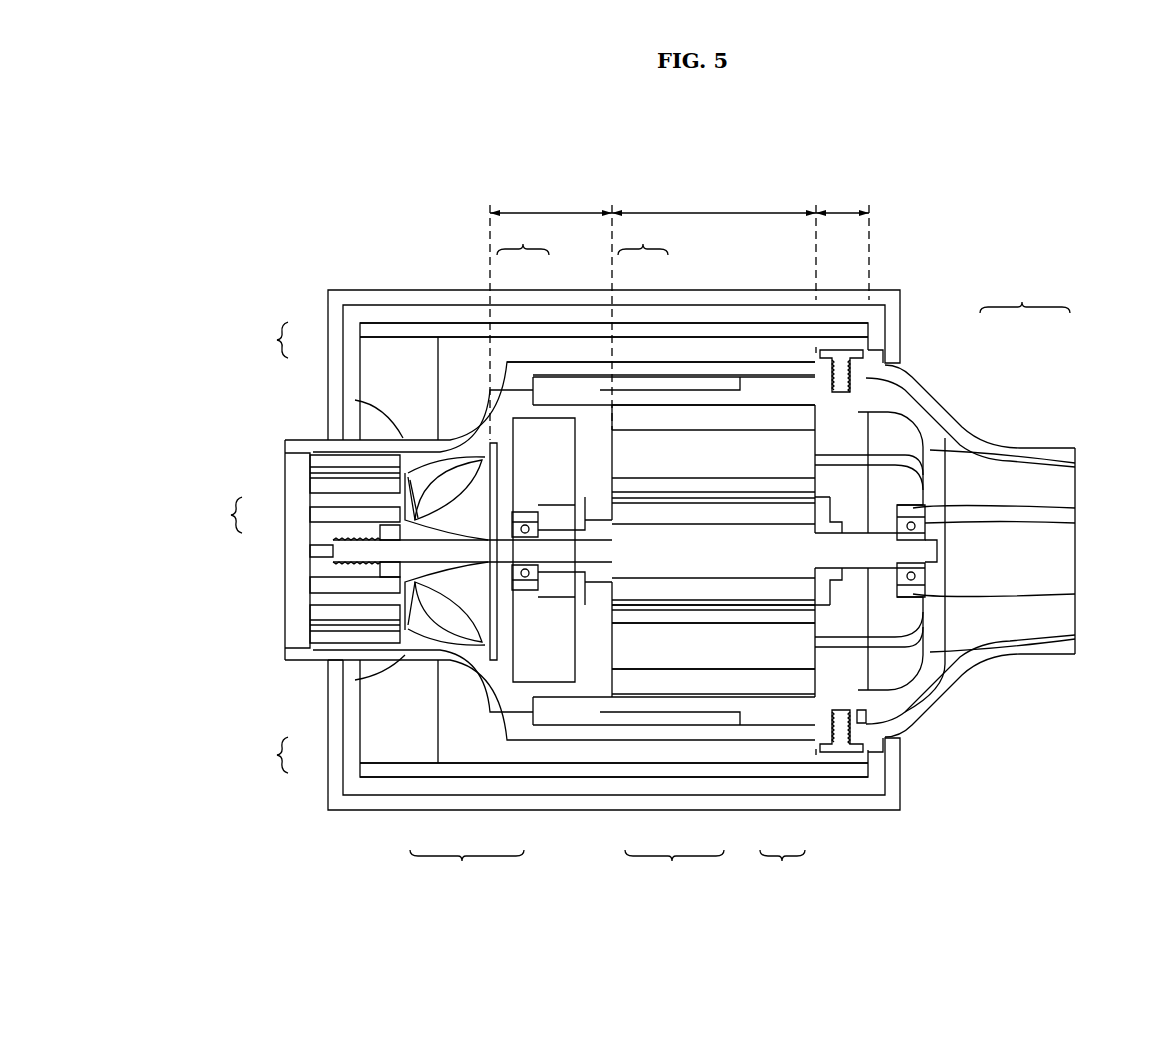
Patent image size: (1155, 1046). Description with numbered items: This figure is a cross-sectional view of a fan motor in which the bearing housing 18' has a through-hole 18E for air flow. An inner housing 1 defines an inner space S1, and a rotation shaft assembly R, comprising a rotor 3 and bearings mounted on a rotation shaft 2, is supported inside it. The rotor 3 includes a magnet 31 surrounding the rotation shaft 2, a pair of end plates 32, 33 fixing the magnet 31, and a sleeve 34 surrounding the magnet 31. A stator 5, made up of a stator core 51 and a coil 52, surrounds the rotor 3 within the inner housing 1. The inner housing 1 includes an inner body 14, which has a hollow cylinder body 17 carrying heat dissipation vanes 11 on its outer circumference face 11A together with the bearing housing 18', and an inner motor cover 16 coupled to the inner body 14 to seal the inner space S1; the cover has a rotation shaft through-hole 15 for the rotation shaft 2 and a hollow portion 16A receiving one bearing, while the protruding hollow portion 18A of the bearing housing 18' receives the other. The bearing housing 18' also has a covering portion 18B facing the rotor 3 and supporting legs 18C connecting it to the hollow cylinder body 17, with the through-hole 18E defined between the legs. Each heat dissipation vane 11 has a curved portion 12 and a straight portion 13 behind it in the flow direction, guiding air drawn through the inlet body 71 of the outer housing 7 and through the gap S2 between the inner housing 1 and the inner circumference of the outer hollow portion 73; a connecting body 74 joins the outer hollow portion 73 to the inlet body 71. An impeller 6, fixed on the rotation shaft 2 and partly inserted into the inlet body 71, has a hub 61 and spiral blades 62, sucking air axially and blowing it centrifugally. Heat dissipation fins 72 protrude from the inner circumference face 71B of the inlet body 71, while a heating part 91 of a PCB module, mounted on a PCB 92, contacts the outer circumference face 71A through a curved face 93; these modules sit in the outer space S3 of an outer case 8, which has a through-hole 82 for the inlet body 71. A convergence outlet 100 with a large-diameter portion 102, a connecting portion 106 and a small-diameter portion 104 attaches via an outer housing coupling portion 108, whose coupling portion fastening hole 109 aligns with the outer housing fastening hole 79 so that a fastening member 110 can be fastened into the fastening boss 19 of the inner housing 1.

The inner housing 1 is at (656, 477).
The rotation shaft 2 is at (925, 550).
The rotor 3 is at (701, 639).
The stator 5 is at (828, 643).
The impeller 6 is at (306, 549).
The outer housing 7 is at (375, 647).
The outer case 8 is at (335, 307).
The heat dissipation vane 11 is at (661, 306).
The outer circumference face 11A is at (700, 392).
The curved portion 12 is at (592, 365).
The straight portion 13 is at (660, 382).
The inner body 14 is at (546, 400).
The rotation shaft through-hole 15 is at (310, 549).
The inner motor cover 16 is at (503, 397).
The hollow portion 16A is at (527, 590).
The hollow cylinder body 17 is at (769, 366).
The bearing housing 18' is at (1031, 483).
The protruding hollow portion 18A is at (1075, 508).
The covering portion 18B is at (1075, 523).
The supporting legs 18C is at (1075, 464).
The through-hole 18E is at (920, 660).
The fastening boss 19 is at (870, 383).
The magnet 31 is at (667, 592).
The end plate 32 is at (603, 600).
The end plate 33 is at (818, 593).
The sleeve 34 is at (700, 605).
The stator core 51 is at (798, 688).
The coil 52 is at (776, 658).
The hub 61 is at (380, 528).
The blades 62 is at (380, 503).
The inlet body 71 is at (413, 657).
The outer circumference face 71A is at (345, 440).
The inner circumference face 71B is at (325, 476).
The heat dissipation fin 72 is at (310, 458).
The outer hollow portion 73 is at (524, 737).
The connecting body 74 is at (462, 693).
The outer housing fastening hole 79 is at (870, 372).
The through-hole 82 is at (345, 670).
The heating part 91 is at (365, 353).
The PCB 92 is at (365, 330).
The curved face 93 is at (355, 400).
The convergence outlet 100 is at (970, 513).
The large-diameter portion 102 is at (930, 383).
The small-diameter portion 104 is at (1060, 450).
The connecting portion 106 is at (975, 435).
The outer housing coupling portion 108 is at (874, 348).
The coupling portion fastening hole 109 is at (818, 350).
The fastening member 110 is at (843, 350).
The rotation shaft assembly R is at (851, 606).
The inner space S1 is at (885, 446).
The gap S2 is at (760, 382).
The outer space S3 is at (463, 353).